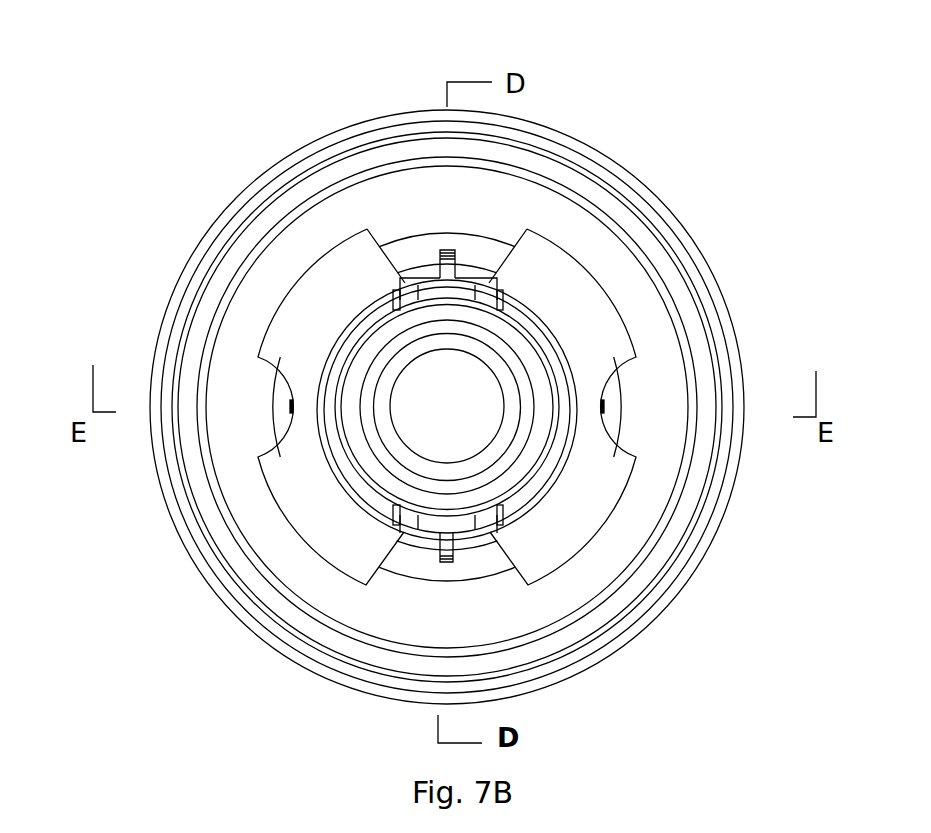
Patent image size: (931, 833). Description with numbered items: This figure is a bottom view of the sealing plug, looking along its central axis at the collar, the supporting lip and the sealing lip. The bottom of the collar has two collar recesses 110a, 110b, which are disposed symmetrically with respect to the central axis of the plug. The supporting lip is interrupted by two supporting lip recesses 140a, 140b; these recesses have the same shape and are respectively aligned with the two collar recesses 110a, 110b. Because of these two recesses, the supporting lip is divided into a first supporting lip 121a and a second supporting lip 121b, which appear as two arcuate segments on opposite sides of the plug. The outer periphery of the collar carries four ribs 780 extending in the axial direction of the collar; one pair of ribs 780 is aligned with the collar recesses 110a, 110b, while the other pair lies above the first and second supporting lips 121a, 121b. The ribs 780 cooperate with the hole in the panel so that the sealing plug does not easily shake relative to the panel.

The collar recess 110a is at (403, 191).
The collar recess 110b is at (345, 595).
The first supporting lip 121a is at (228, 407).
The second supporting lip 121b is at (623, 386).
The supporting lip recess 140a is at (399, 148).
The supporting lip recess 140b is at (565, 611).
The rib 780 is at (569, 193).